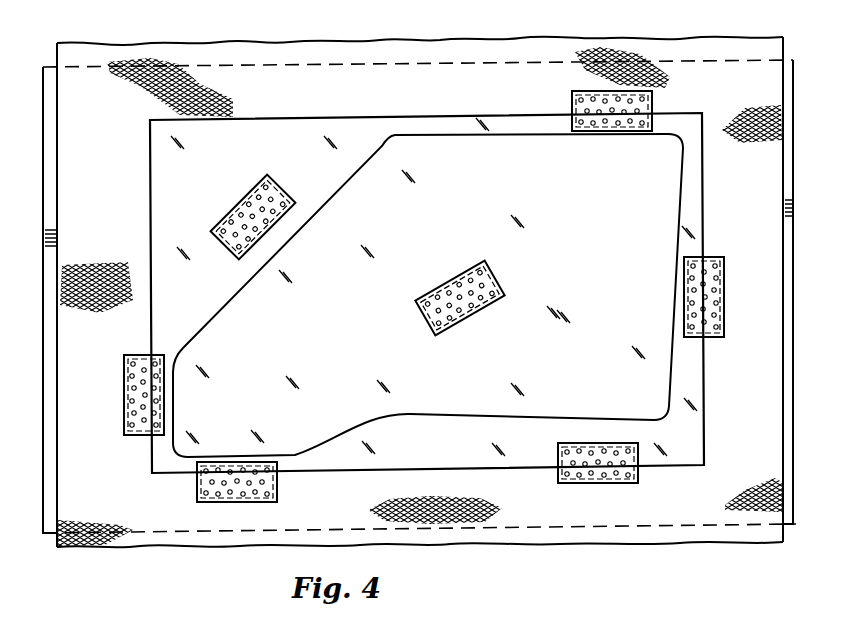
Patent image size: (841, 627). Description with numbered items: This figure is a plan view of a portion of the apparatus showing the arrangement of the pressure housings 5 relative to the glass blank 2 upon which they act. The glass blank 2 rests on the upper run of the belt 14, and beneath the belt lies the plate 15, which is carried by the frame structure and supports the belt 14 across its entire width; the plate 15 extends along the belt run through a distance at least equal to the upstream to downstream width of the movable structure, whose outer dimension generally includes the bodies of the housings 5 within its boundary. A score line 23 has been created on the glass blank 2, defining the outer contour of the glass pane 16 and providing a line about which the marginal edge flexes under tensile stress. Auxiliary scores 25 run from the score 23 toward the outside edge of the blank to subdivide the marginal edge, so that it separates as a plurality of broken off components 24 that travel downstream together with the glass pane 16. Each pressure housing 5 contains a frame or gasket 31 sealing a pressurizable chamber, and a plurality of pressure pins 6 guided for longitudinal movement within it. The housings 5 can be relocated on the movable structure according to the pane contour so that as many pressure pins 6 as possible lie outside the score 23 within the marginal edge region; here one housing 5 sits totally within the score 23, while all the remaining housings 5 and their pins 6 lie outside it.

The glass blank 2 is at (146, 159).
The pressure housing 5 is at (262, 181).
The pressure pin 6 is at (277, 188).
The belt 14 is at (260, 95).
The plate 15 is at (395, 70).
The glass pane 16 is at (434, 287).
The score line 23 is at (501, 137).
The broken off components 24 is at (448, 122).
The auxiliary score 25 is at (690, 115).
The frame or gasket 31 is at (237, 205).